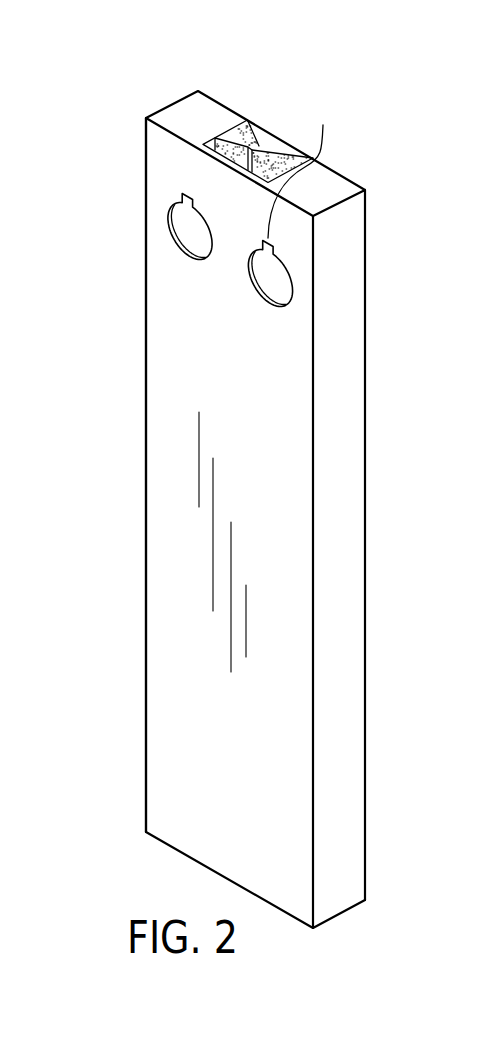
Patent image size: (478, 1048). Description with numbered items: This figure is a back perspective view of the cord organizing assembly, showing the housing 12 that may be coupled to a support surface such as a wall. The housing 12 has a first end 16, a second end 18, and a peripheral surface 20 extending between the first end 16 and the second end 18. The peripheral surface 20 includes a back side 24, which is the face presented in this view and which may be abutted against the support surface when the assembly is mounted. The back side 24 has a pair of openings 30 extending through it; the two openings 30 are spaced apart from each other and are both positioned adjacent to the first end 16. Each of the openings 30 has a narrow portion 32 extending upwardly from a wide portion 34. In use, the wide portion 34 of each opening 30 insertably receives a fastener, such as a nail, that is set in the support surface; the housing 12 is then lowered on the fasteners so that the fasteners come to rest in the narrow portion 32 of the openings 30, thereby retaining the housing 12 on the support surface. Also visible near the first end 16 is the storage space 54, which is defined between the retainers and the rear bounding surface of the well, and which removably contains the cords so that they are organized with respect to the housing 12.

The housing 12 is at (146, 118).
The first end 16 is at (192, 112).
The second end 18 is at (332, 914).
The peripheral surface 20 is at (178, 361).
The back side 24 is at (156, 531).
The openings 30 is at (163, 217).
The narrow portion 32 is at (305, 166).
The wide portion 34 is at (276, 308).
The storage space 54 is at (230, 149).